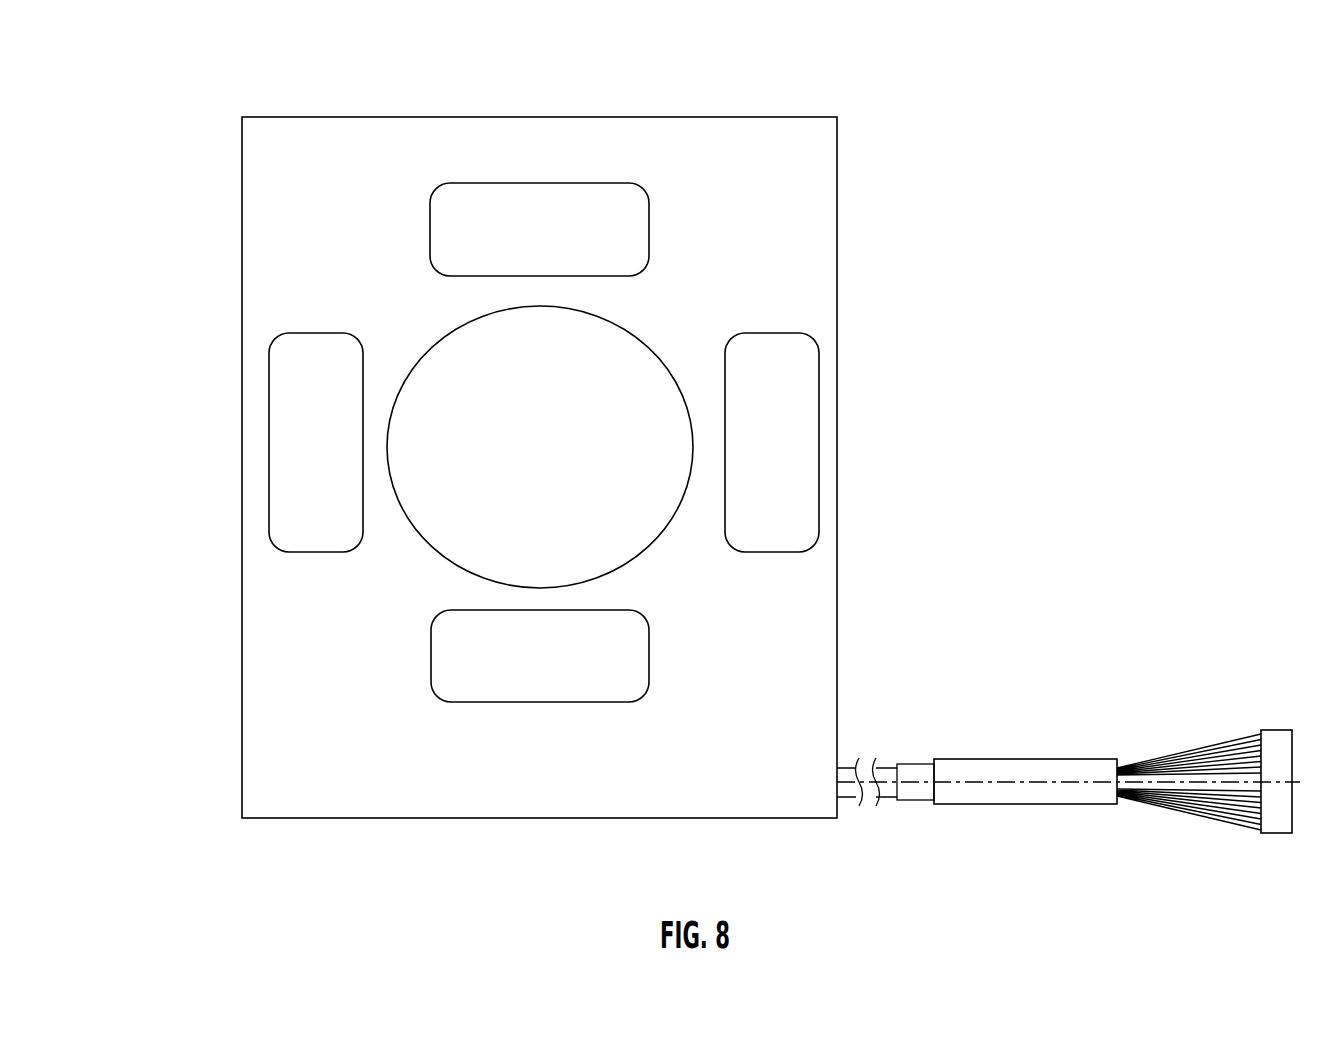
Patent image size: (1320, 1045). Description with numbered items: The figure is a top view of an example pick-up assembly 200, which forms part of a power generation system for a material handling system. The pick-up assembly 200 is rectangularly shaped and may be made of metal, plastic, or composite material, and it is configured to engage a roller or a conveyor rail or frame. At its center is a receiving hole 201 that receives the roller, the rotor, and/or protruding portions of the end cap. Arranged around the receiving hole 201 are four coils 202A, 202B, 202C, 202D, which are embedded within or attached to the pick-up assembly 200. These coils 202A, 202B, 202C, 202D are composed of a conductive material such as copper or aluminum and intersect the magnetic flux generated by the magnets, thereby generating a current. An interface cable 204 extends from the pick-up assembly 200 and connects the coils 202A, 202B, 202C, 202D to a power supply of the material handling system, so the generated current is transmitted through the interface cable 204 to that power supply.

The pick-up assembly 200 is at (203, 76).
The receiving hole 201 is at (452, 550).
The coil 202A is at (537, 183).
The coil 202B is at (269, 457).
The coil 202C is at (539, 702).
The coil 202D is at (819, 457).
The interface cable 204 is at (1022, 758).